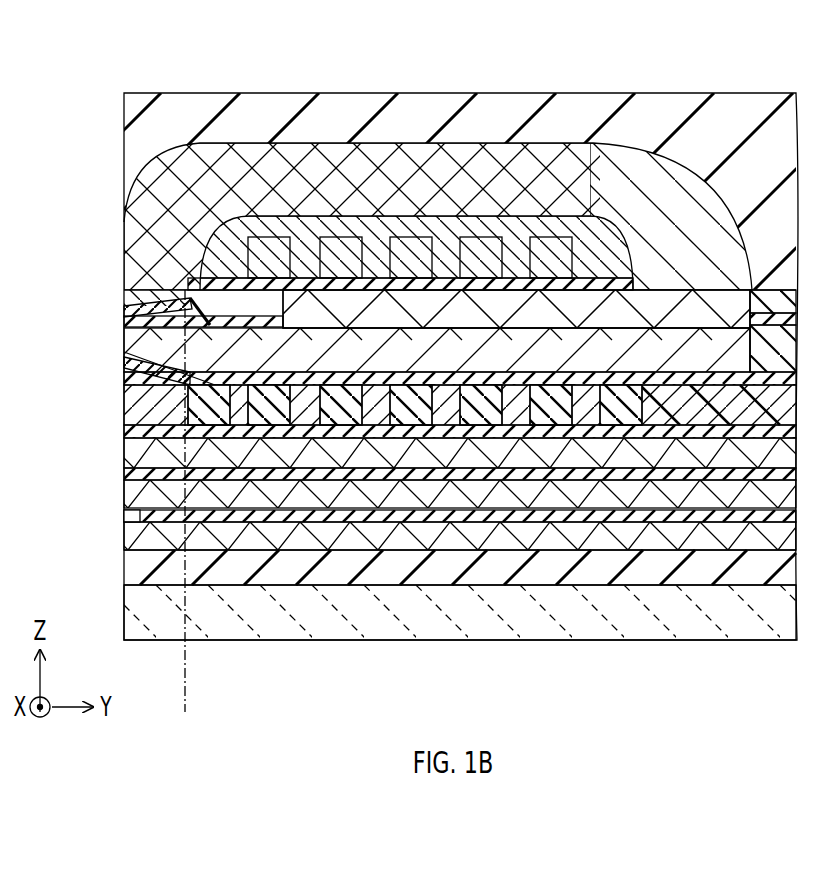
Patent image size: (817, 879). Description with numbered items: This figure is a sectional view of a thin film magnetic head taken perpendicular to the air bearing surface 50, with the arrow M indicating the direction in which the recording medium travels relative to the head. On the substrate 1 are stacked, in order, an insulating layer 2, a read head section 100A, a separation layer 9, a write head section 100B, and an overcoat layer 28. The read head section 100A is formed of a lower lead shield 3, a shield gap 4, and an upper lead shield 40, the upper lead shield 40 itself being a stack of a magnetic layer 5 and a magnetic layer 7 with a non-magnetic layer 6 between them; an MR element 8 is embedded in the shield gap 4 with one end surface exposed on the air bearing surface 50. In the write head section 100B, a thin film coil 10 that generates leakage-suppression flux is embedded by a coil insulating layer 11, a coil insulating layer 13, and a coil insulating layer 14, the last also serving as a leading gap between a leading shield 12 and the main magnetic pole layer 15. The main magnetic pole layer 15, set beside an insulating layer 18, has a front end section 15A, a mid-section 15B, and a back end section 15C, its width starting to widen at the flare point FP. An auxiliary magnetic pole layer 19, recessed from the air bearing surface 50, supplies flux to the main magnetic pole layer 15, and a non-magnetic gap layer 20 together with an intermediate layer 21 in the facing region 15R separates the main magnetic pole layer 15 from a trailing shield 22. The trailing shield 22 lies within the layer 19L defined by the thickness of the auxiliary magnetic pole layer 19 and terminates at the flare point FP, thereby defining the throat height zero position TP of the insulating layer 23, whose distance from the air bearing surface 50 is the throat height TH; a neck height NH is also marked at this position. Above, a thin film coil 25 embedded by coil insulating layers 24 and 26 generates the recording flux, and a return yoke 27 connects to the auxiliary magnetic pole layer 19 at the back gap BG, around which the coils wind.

The air bearing surface 50 is at (121, 142).
The overcoat layer 28 is at (745, 120).
The return yoke 27 is at (440, 175).
The coil insulating layer 26 is at (602, 240).
The coil insulating layer 24 is at (578, 225).
The trailing shield 22 is at (133, 290).
The intermediate layer 21 is at (166, 290).
The main magnetic pole layer 15 is at (265, 36).
The front end section 15A is at (269, 250).
The mid-section 15B is at (341, 250).
The back end section 15C is at (411, 250).
The thin film coil 25 is at (481, 250).
The auxiliary magnetic pole layer 19 is at (545, 258).
The back gap BG is at (667, 275).
The separation layer 9 is at (440, 292).
The thin film coil 10 is at (400, 302).
The layer 19L is at (124, 328).
The coil insulating layer 11 is at (348, 343).
The insulating layer 18 is at (770, 362).
The magnetic layer 7 is at (478, 380).
The leading shield 12 is at (210, 407).
The non-magnetic gap layer 20 is at (260, 405).
The insulating layer 23 is at (290, 347).
The coil insulating layer 14 is at (335, 403).
The non-magnetic layer 6 is at (516, 434).
The coil insulating layer 13 is at (737, 415).
The magnetic layer 5 is at (560, 476).
The upper lead shield 40 is at (580, 683).
The shield gap 4 is at (598, 518).
The MR element 8 is at (125, 545).
The lower lead shield 3 is at (650, 538).
The insulating layer 2 is at (683, 570).
The substrate 1 is at (717, 627).
The write head section 100B is at (118, 204).
The read head section 100A is at (118, 440).
The up arrow M is at (15, 112).
The facing region 15R is at (183, 655).
The throat height TH is at (131, 701).
The neck height NH is at (166, 701).
The throat height zero position TP is at (185, 706).
The flare point FP is at (204, 739).